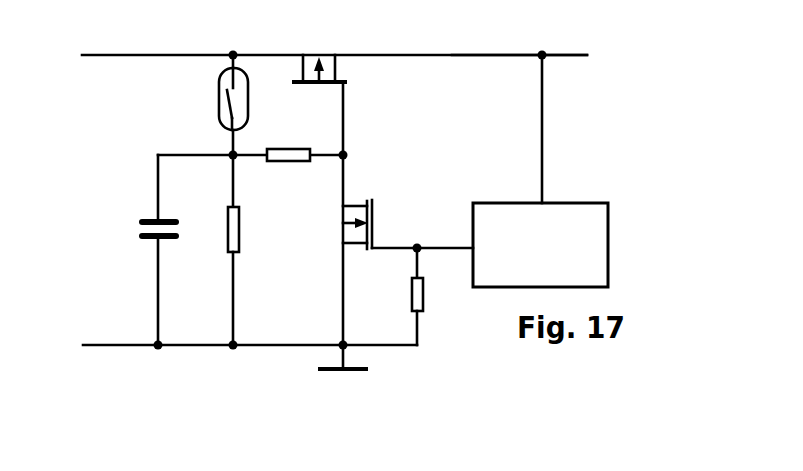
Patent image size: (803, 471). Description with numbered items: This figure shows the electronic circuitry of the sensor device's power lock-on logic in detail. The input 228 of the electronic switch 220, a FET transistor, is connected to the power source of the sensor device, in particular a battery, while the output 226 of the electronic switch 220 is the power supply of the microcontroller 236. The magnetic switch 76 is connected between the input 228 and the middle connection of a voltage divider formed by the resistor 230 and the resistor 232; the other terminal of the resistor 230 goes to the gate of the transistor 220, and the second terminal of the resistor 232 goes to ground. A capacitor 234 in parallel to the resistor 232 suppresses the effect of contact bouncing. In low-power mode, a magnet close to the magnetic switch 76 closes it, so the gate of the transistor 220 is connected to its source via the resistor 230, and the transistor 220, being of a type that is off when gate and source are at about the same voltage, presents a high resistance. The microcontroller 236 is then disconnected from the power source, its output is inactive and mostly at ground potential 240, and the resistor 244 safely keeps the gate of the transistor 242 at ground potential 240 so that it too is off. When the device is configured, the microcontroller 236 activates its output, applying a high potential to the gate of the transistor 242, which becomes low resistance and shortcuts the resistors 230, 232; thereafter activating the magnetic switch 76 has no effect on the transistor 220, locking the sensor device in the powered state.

The magnetic switch 76 is at (219, 100).
The electronic switch 220 is at (330, 55).
The output 226 is at (453, 55).
The input 228 is at (269, 55).
The resistor 230 is at (288, 148).
The resistor 232 is at (242, 221).
The capacitor 234 is at (142, 219).
The microcontroller 236 is at (540, 245).
The ground potential 240 is at (380, 367).
The transistor 242 is at (374, 222).
The resistor 244 is at (425, 300).